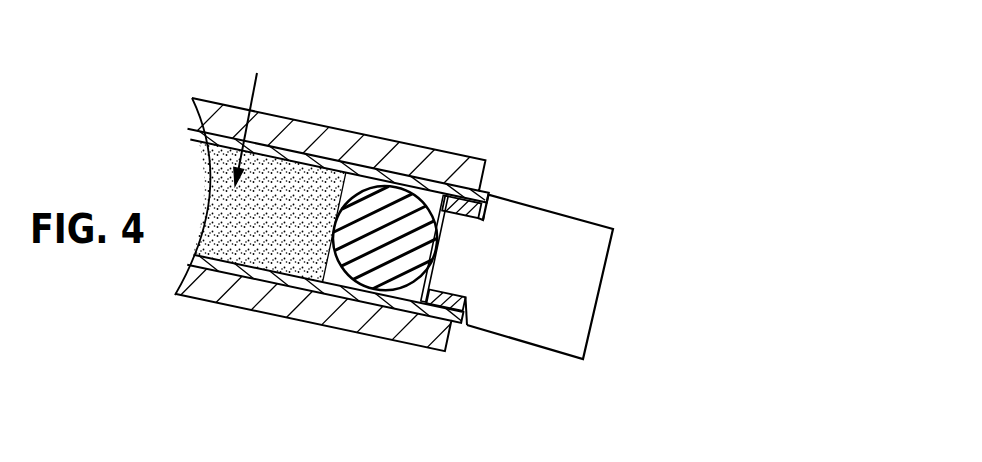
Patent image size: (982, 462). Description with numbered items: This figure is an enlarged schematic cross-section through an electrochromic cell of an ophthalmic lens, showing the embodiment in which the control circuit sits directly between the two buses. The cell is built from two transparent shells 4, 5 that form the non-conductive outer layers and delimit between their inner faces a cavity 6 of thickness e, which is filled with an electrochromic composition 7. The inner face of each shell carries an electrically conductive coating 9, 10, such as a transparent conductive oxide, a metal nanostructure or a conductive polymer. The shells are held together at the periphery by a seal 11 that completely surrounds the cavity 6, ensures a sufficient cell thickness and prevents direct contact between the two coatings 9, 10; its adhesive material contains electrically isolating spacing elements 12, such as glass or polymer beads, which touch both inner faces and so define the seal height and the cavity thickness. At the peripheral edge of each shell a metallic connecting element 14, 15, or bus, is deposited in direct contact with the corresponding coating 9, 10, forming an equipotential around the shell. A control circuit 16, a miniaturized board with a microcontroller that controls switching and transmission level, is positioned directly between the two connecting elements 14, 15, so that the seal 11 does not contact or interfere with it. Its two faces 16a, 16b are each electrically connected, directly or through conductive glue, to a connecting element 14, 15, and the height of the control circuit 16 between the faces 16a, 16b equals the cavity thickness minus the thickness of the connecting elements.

The transparent shell 4 is at (328, 307).
The transparent shell 5 is at (372, 148).
The cavity 6 is at (249, 116).
The electrochromic composition 7 is at (252, 237).
The electrically conductive coating 9 is at (288, 277).
The electrically conductive coating 10 is at (298, 157).
The peripheral seal 11 is at (418, 290).
The spacing elements 12 is at (390, 240).
The connecting element 14 is at (440, 312).
The connecting element 15 is at (484, 196).
The control circuit 16 is at (580, 263).
The face of control circuit 16a is at (438, 302).
The face of control circuit 16b is at (458, 204).